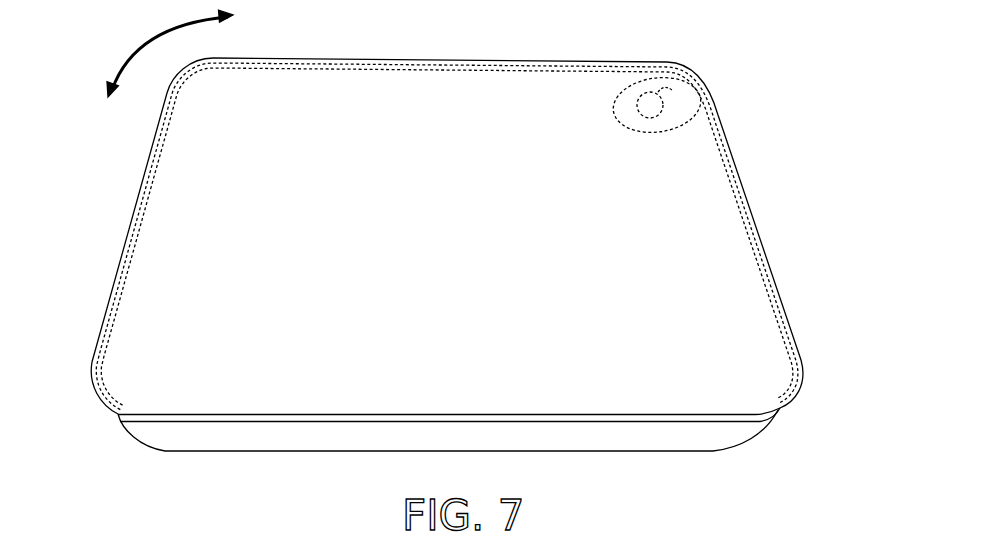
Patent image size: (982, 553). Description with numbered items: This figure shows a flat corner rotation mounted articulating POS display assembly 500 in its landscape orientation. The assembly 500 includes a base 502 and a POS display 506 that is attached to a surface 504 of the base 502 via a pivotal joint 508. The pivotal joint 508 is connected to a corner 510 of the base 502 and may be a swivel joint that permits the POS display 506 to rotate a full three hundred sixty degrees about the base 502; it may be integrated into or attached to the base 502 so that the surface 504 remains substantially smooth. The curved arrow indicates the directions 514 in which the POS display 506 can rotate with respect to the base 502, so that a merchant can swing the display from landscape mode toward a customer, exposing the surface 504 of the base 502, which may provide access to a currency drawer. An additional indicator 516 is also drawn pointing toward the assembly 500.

The flat corner rotation mounted articulating POS display assembly 500 is at (470, 251).
The base 502 is at (697, 442).
The surface 504 is at (794, 323).
The POS display 506 is at (737, 255).
The pivotal joint 508 is at (580, 85).
The corner 510 is at (638, 85).
The directions / first position 514 is at (128, 50).
The direction indicator arrow 516 is at (778, 106).